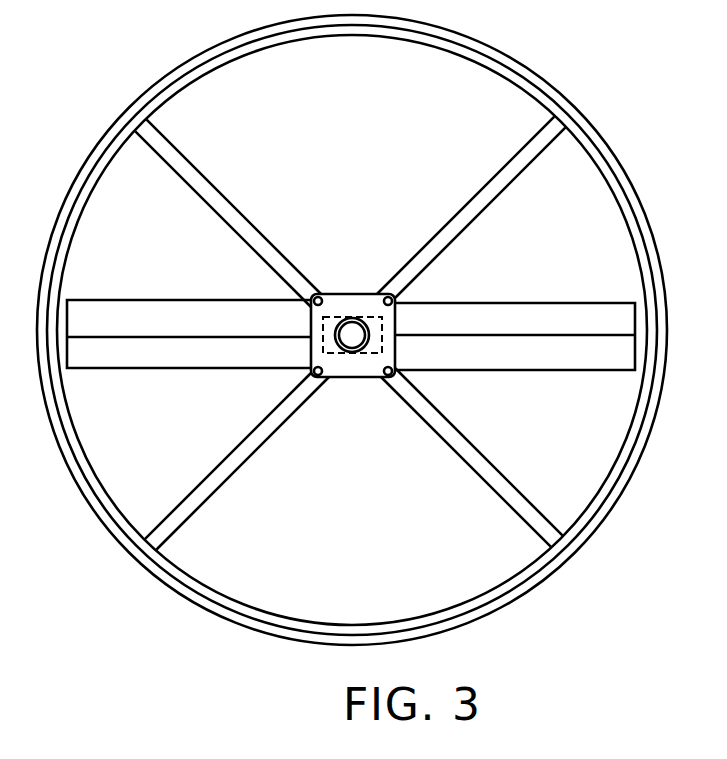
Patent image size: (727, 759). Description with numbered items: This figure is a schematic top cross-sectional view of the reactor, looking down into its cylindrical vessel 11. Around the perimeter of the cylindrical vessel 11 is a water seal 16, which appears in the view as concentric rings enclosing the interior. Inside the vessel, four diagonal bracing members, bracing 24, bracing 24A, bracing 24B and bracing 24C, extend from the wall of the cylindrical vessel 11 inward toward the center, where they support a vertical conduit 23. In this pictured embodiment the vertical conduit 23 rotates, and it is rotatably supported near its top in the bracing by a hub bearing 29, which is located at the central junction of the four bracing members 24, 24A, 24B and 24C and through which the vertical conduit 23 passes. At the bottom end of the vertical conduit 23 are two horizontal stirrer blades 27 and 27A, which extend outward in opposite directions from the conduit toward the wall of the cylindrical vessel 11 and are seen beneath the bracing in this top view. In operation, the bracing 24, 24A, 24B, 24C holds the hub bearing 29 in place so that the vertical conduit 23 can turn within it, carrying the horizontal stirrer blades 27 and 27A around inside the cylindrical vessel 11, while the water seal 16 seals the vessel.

The water seal 16 is at (556, 96).
The cylindrical vessel 11 is at (609, 188).
The bracing 24 is at (213, 177).
The bracing 24A is at (492, 177).
The bracing 24B is at (238, 462).
The bracing 24C is at (462, 460).
The horizontal stirrer blade 27 is at (163, 316).
The horizontal stirrer blade 27A is at (494, 315).
The hub bearing 29 is at (364, 298).
The vertical conduit 23 is at (357, 342).